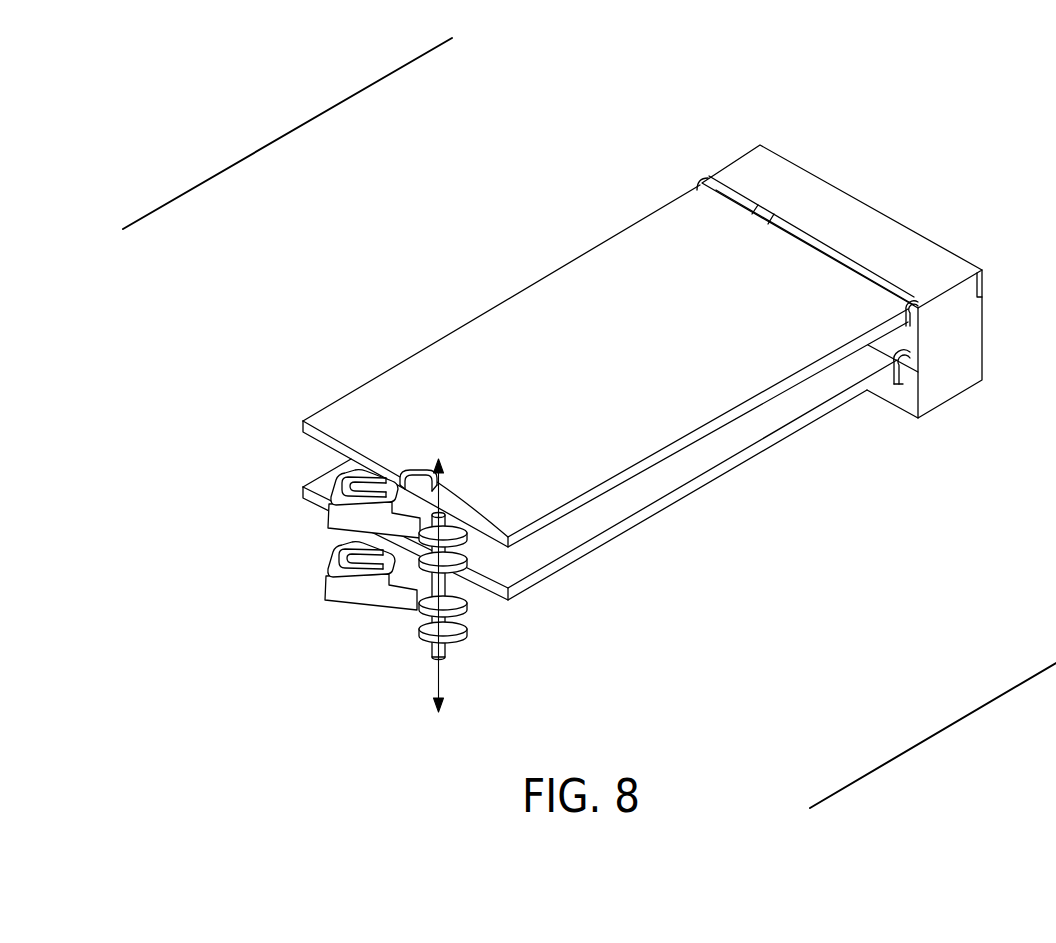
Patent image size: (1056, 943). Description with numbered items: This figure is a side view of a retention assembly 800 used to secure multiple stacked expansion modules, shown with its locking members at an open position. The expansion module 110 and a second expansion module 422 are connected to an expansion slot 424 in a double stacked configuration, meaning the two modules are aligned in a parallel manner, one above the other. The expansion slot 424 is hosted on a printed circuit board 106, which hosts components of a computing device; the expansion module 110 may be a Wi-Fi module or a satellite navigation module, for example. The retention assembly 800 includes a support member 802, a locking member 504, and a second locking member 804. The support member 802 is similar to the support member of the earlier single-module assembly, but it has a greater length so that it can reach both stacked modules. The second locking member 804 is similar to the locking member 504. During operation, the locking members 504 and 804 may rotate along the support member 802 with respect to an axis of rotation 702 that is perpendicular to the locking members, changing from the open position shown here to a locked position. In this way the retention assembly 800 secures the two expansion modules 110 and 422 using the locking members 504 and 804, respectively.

The printed circuit board 106 is at (323, 110).
The expansion module 110 is at (794, 434).
The second expansion module 422 is at (493, 309).
The expansion slot 424 is at (747, 153).
The locking member 504 is at (307, 589).
The axis of rotation 702 is at (441, 484).
The retention assembly 800 is at (375, 585).
The support member 802 is at (451, 655).
The second locking member 804 is at (317, 516).